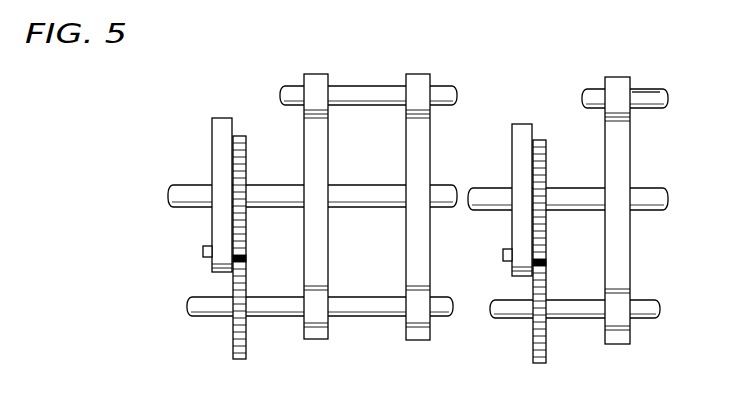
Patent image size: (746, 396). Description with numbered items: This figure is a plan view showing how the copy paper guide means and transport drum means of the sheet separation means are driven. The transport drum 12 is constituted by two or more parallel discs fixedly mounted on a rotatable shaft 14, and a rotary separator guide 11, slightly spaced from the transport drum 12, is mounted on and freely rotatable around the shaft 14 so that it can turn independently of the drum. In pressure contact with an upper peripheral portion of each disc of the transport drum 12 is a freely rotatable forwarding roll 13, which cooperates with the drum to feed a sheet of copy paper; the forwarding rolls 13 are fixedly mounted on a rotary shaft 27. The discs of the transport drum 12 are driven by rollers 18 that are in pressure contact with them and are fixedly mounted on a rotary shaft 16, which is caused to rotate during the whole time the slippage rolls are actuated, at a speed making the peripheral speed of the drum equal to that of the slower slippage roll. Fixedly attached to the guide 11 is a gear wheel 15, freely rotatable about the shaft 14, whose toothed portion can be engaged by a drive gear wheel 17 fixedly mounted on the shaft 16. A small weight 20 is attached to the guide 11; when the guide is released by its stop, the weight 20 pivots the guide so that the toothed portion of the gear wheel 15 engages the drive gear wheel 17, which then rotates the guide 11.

The rotary separator guide 11 is at (224, 126).
The transport drum 12 is at (322, 138).
The forwarding roll 13 is at (317, 82).
The rotatable shaft 14 is at (275, 192).
The gear wheel 15 is at (240, 216).
The rotary shaft 16 is at (279, 310).
The drive gear wheel 17 is at (238, 292).
The rollers 18 is at (318, 293).
The small weight 20 is at (203, 250).
The rotary shaft 27 is at (658, 95).